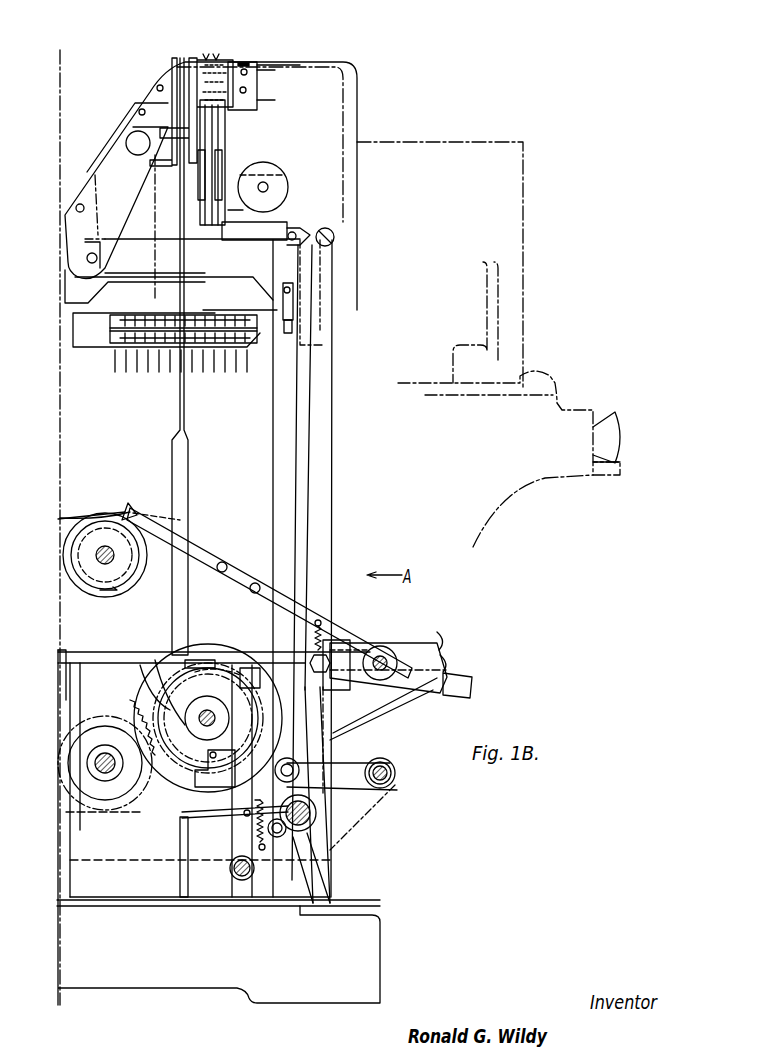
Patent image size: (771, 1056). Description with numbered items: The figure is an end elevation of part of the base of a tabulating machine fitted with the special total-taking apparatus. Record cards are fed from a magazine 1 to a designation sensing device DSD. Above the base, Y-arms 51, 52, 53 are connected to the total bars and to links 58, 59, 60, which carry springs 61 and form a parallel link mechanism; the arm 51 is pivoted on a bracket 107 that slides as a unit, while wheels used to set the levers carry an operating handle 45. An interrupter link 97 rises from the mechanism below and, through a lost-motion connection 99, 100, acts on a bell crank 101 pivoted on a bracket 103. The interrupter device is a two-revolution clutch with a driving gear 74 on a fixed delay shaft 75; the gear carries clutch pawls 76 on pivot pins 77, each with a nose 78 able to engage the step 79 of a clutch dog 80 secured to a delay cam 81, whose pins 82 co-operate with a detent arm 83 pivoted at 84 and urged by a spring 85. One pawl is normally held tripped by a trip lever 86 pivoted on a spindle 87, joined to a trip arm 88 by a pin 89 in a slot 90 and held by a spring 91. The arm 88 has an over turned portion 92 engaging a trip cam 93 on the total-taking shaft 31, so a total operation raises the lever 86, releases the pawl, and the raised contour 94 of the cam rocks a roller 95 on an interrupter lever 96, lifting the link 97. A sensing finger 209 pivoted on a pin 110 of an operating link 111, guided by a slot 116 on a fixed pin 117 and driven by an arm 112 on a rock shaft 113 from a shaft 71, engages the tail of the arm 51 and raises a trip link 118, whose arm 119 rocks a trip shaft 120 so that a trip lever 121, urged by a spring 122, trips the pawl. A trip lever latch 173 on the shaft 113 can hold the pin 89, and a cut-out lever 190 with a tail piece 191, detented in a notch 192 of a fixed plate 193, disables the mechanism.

The magazine 1 is at (466, 221).
The bracket 103 is at (157, 87).
The bracket 107 is at (190, 60).
The link 60 is at (206, 58).
The spring 61 is at (216, 58).
The link 59 is at (232, 58).
The link 58 is at (258, 66).
The operating handle 45 is at (296, 64).
The lost-motion connection 100 is at (200, 125).
The second Y-arm 51 is at (212, 132).
The bell crank 101 is at (210, 148).
The lost-motion connection 99 is at (205, 185).
The Y-arm 53 is at (212, 196).
The Y-arm 52 is at (215, 216).
The sensing finger 209 is at (255, 223).
The pin 110 is at (330, 238).
The fixed pin 117 is at (290, 296).
The slot 116 is at (293, 330).
The operating link 111 is at (320, 345).
The trip link 118 is at (322, 338).
The designation sensing device DSD is at (149, 386).
The interrupter link 97 is at (190, 443).
The trip cam 93 is at (117, 502).
The over turned portion 92 is at (133, 513).
The total-taking shaft 31 is at (117, 550).
The trip arm 88 is at (195, 548).
The interrupter lever 96 is at (66, 652).
The driving gear 74 is at (115, 720).
The pin 82 is at (150, 678).
The nose 78 is at (168, 690).
The clutch pawl 76 is at (245, 790).
The trip lever 86 is at (200, 660).
The roller 95 is at (215, 665).
The pivot pin 77 is at (200, 768).
The step 79 is at (245, 678).
The pin 89 is at (317, 620).
The spring 91 is at (324, 652).
The tail piece 191 is at (345, 660).
The spindle 87 is at (381, 648).
The fixed plate 193 is at (395, 648).
The notch 192 is at (440, 632).
The cut-out lever 190 is at (457, 678).
The slot 90 is at (335, 680).
The trip lever latch 173 is at (325, 742).
The arm 119 is at (345, 750).
The trip shaft 120 is at (380, 766).
The trip lever 121 is at (338, 795).
The shaft 71 is at (100, 785).
The delay cam 81 is at (150, 745).
The delay shaft 75 is at (185, 735).
The clutch dog 80 is at (205, 722).
The raised contour 94 is at (194, 857).
The spring 85 is at (225, 815).
The detent arm 83 is at (240, 878).
The pivot 84 is at (245, 878).
The spring 122 is at (262, 852).
The arm 112 is at (295, 832).
The rock shaft 113 is at (306, 832).